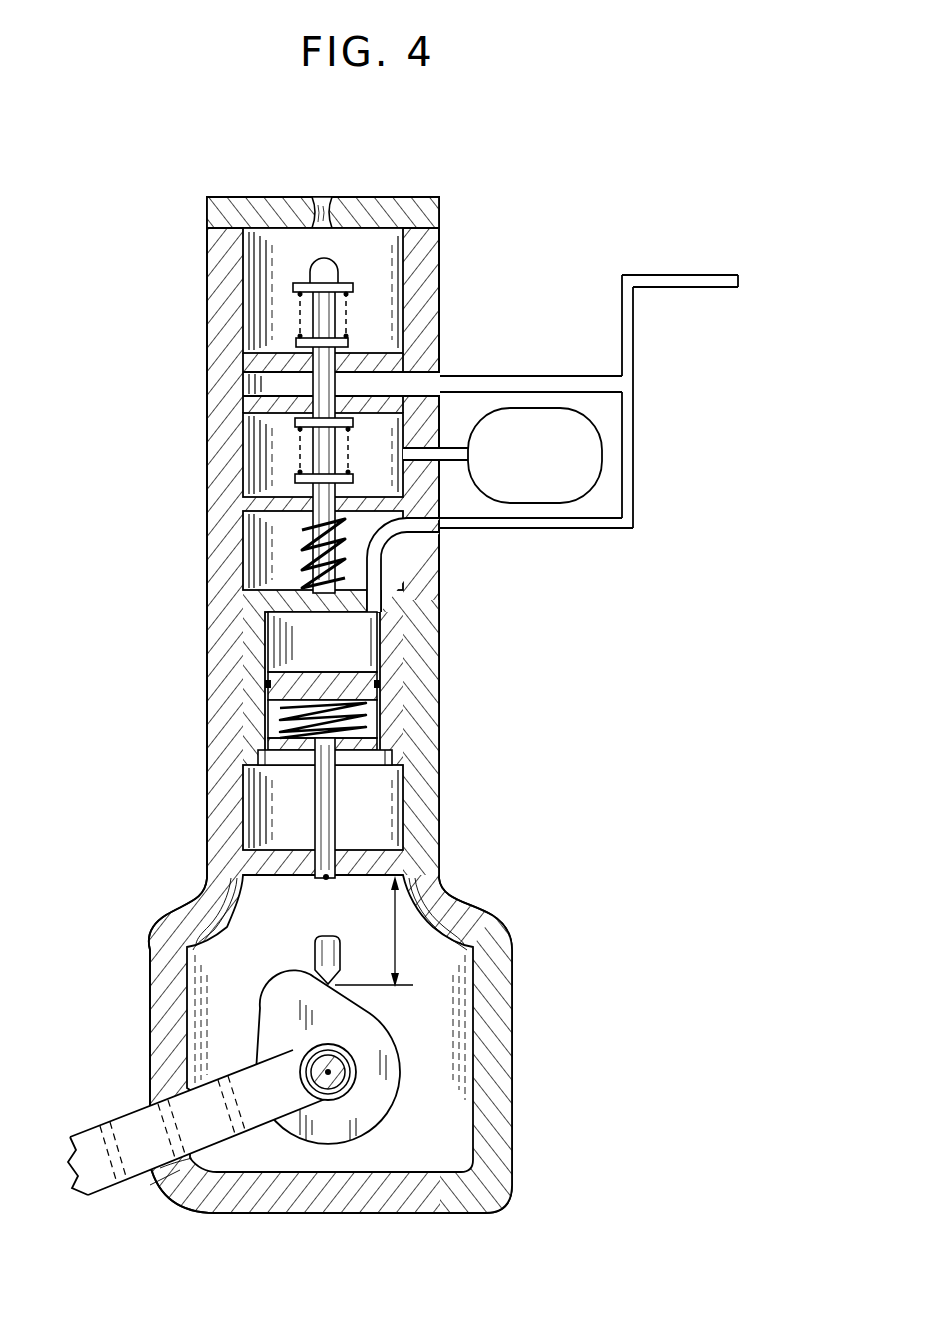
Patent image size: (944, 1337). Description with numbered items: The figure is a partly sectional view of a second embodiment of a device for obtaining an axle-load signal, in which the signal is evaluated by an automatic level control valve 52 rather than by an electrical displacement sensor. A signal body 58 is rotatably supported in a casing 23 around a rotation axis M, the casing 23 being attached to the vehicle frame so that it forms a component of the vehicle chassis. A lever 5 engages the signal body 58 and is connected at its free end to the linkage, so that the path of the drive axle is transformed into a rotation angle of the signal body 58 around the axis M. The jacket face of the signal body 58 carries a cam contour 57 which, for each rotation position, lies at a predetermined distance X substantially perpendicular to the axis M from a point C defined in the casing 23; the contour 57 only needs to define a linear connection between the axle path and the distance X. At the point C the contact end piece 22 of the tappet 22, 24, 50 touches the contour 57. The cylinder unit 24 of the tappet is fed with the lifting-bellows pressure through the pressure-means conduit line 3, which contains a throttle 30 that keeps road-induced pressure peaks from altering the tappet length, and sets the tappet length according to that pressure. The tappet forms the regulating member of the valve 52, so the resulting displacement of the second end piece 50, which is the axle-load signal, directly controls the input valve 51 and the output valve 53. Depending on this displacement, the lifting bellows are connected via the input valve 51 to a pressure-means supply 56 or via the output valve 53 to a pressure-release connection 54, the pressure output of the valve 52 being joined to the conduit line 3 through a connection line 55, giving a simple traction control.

The pressure-means conduit line 3 is at (587, 527).
The lever 5 is at (115, 1135).
The contact end piece 22 is at (334, 805).
The casing 23 is at (425, 720).
The cylinder unit 24 is at (232, 670).
The throttle 30 is at (428, 538).
The second end piece 50 is at (310, 540).
The input valve 51 is at (279, 423).
The automatic level control valve 52 is at (300, 666).
The output valve 53 is at (278, 338).
The pressure-release connection 54 is at (316, 194).
The connection line 55 is at (495, 378).
The pressure-means supply 56 is at (590, 452).
The contour 57 is at (360, 1002).
The signal body 58 is at (385, 1060).
The point C is at (325, 878).
The distance X is at (374, 931).
The rotation axis M is at (328, 1072).